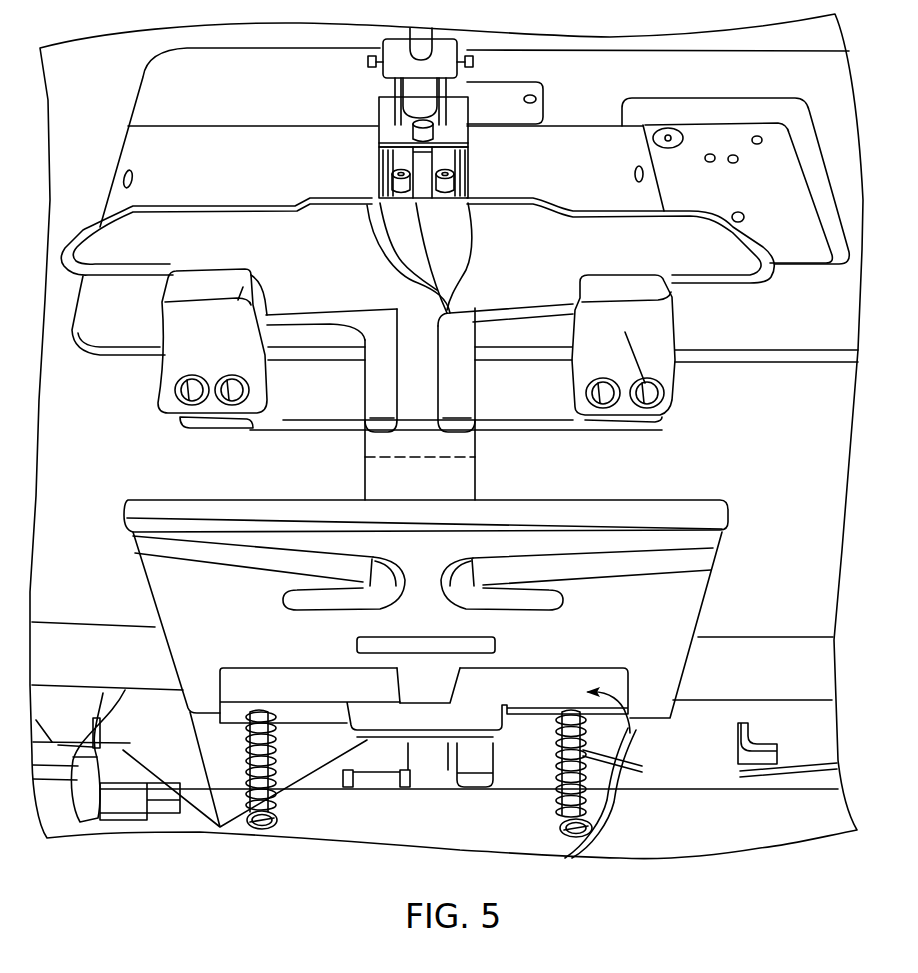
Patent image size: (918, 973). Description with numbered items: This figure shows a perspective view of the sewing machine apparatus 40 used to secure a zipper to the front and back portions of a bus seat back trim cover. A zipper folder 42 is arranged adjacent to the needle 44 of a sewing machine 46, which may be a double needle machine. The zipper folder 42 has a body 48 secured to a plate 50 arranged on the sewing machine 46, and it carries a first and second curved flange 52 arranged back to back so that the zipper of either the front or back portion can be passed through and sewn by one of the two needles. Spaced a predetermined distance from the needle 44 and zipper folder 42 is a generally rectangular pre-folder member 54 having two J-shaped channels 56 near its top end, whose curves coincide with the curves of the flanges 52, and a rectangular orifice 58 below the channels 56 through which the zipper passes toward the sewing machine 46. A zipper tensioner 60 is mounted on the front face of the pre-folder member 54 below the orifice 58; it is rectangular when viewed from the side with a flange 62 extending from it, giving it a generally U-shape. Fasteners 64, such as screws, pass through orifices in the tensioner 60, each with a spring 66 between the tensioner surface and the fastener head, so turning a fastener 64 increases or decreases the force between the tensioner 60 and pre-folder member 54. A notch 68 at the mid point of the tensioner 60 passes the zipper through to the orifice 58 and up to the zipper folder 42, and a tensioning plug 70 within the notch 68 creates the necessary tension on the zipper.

The sewing machine apparatus 40 is at (96, 491).
The zipper folder 42 is at (482, 268).
The needle 44 is at (420, 180).
The sewing machine 46 is at (252, 183).
The body 48 is at (342, 288).
The plate 50 is at (664, 394).
The curved flange 52 is at (443, 240).
The pre-folder member 54 is at (427, 590).
The channel 56 is at (282, 558).
The rectangular orifice 58 is at (430, 633).
The zipper tensioner 60 is at (633, 732).
The flange 62 is at (424, 663).
The fastener 64 is at (83, 727).
The spring 66 is at (260, 714).
The notch 68 is at (405, 698).
The tensioning plug 70 is at (430, 678).